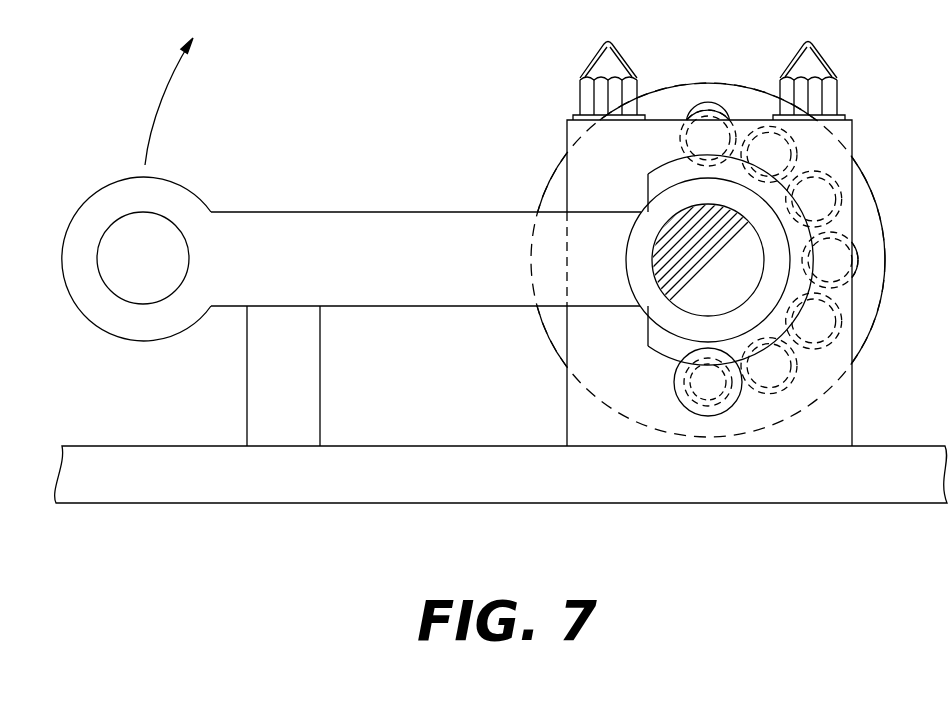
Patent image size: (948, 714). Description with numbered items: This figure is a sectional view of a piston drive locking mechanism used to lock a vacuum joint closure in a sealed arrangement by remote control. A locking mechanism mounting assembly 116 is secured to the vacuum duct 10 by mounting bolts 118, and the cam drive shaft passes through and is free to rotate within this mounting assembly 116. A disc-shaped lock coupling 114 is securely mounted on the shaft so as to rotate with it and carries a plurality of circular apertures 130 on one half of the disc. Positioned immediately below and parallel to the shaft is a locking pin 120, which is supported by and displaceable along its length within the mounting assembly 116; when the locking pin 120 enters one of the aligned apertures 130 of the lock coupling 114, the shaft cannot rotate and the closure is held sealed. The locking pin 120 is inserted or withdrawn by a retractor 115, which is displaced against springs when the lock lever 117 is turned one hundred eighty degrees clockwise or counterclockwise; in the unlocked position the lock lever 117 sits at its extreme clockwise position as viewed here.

The vacuum duct 10 is at (803, 495).
The lock coupling 114 is at (725, 85).
The retractor 115 is at (653, 310).
The locking mechanism mounting assembly 116 is at (567, 127).
The lock lever 117 is at (276, 212).
The mounting bolts 118 is at (620, 57).
The locking pin 120 is at (697, 410).
The circular apertures 130 is at (857, 262).